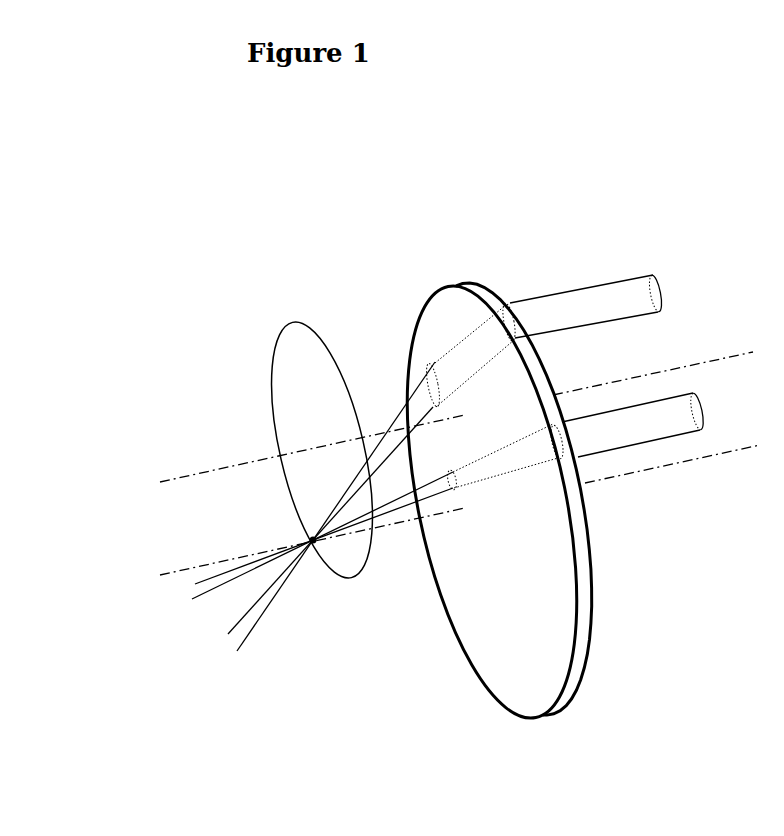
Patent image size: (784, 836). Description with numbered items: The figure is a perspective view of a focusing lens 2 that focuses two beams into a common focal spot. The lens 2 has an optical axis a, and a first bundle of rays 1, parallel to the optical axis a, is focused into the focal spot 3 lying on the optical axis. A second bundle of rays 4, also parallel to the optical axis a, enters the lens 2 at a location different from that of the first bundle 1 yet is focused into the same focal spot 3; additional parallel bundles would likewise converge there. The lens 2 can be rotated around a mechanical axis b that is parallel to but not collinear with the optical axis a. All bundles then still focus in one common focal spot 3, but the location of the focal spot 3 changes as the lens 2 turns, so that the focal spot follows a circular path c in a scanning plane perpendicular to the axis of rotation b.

The first bundle of rays 1 is at (608, 297).
The lens 2 is at (442, 322).
The focal spot 3 is at (314, 548).
The second bundle of rays 4 is at (668, 421).
The optical axis a is at (460, 512).
The mechanical axis b is at (456, 417).
The circular path c is at (322, 450).